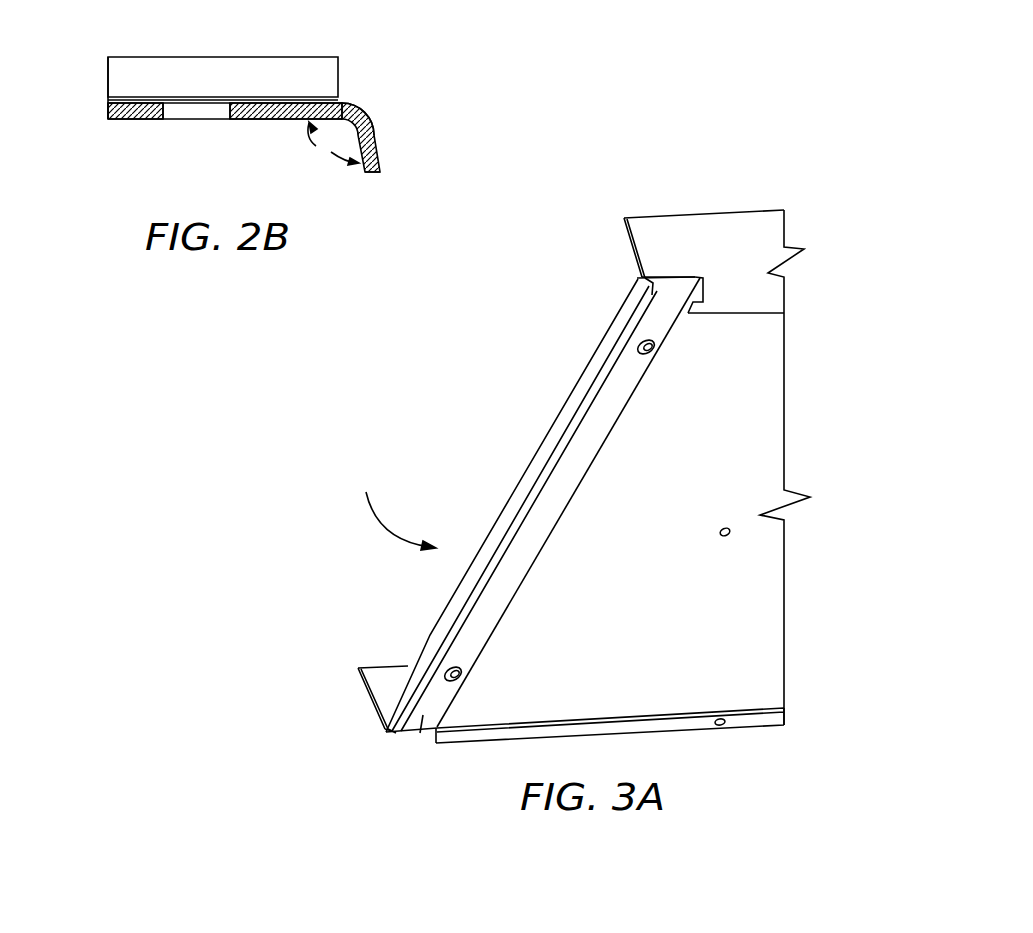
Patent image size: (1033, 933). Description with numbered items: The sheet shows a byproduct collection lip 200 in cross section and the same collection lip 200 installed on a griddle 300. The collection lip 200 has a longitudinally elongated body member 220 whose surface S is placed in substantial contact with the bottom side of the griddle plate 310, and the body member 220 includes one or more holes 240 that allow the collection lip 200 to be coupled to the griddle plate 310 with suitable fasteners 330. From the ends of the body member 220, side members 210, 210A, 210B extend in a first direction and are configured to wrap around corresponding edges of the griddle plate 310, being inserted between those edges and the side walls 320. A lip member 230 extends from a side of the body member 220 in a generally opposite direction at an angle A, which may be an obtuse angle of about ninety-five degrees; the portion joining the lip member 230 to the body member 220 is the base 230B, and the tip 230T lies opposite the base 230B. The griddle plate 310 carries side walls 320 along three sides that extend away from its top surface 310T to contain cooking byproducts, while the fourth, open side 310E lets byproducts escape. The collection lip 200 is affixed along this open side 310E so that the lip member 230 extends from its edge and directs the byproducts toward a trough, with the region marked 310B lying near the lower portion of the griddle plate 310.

In FIG. 3A, the collection lip 200 is at (421, 733).
In FIG. 2B, the side member 210 is at (210, 56).
In FIG. 3A, the side member 210A is at (422, 731).
In FIG. 3A, the side member 210B is at (640, 279).
In FIG. 2B, the body member 220 is at (137, 118).
In FIG. 2B, the lip member 230 is at (377, 128).
In FIG. 2B, the base of the lip member 230B is at (355, 103).
In FIG. 2B, the tip 230T is at (370, 177).
In FIG. 2B, the holes 240 is at (190, 110).
In FIG. 3A, the griddle 300 is at (750, 355).
In FIG. 3A, the griddle plate 310 is at (585, 367).
In FIG. 3A, the top surface of the griddle plate 310T is at (514, 488).
In FIG. 3A, the open side of the griddle plate 310E is at (489, 505).
In FIG. 3A, the bottom of support plate 310B is at (760, 670).
In FIG. 3A, the side walls 320 is at (708, 233).
In FIG. 3A, the fasteners 330 is at (647, 350).
In FIG. 2B, the surface of the body member S is at (140, 100).
In FIG. 2B, the angle A is at (333, 143).